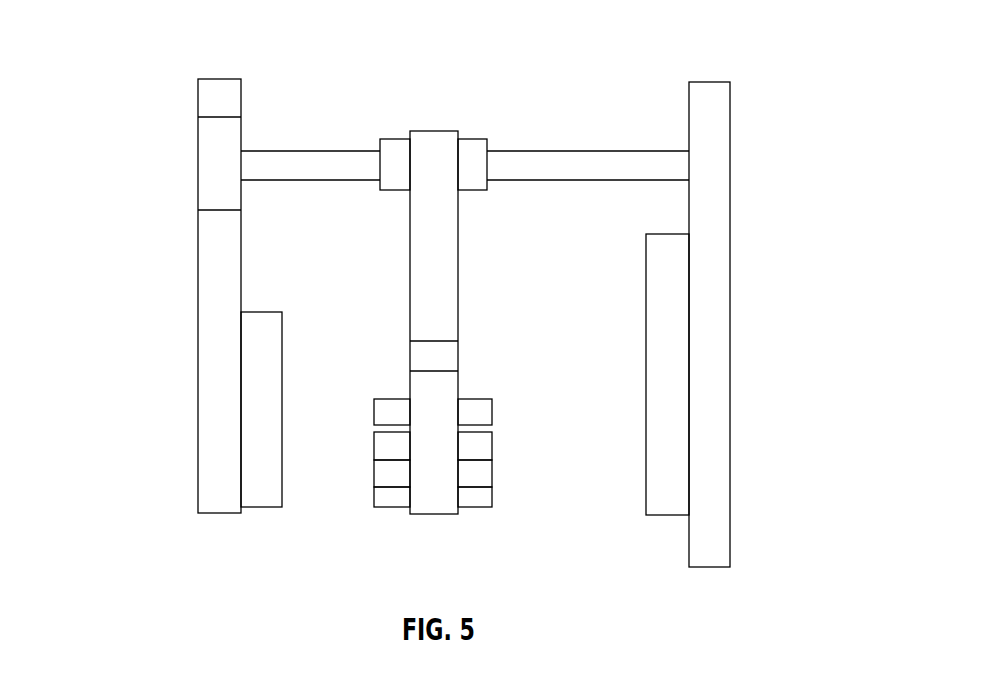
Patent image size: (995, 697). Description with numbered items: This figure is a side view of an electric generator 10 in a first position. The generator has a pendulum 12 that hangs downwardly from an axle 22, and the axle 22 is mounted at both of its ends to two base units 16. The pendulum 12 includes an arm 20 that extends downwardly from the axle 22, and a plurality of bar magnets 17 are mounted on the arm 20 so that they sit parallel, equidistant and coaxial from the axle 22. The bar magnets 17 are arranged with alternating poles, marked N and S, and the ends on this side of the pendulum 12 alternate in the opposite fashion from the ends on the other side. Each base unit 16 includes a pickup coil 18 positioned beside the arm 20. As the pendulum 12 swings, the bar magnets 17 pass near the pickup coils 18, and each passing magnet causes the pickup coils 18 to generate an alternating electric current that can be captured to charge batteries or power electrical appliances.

The electric generator 10 is at (725, 57).
The pendulum 12 is at (464, 255).
The base units 16 is at (197, 397).
The bar magnets 17 is at (397, 397).
The pickup coil 18 is at (282, 396).
The arm 20 is at (416, 240).
The axle 22 is at (474, 148).